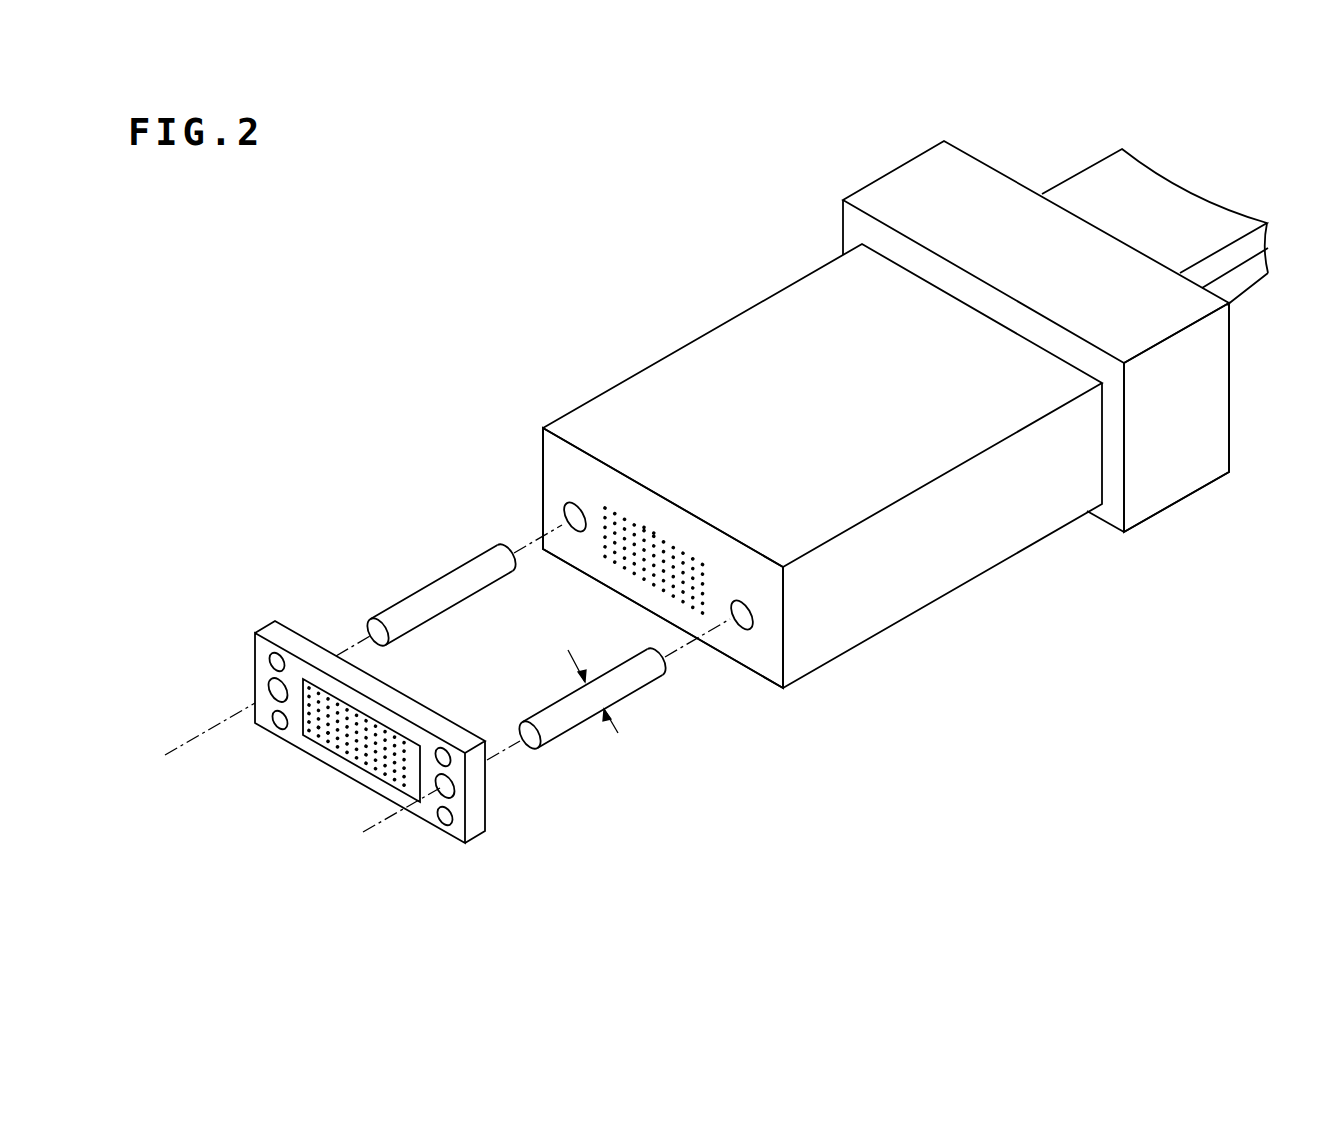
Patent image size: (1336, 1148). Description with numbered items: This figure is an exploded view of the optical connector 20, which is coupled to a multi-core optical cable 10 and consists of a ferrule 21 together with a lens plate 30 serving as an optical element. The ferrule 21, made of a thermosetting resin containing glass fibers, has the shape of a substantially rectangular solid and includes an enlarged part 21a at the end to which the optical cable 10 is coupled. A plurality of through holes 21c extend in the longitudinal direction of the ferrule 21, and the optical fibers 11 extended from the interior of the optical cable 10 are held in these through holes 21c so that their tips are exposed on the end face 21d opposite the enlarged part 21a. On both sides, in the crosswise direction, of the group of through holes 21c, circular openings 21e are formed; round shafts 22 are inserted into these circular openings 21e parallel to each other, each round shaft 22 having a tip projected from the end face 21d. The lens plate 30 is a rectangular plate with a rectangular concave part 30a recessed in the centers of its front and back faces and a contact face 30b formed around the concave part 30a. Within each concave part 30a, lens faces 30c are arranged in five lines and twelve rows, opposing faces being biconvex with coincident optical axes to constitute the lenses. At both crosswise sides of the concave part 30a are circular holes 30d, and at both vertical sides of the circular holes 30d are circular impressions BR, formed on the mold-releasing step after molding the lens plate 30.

The optical cable 10 is at (1177, 215).
The optical fibers 11 is at (665, 555).
The optical connector 20 is at (513, 256).
The ferrule 21 is at (598, 395).
The enlarged part 21a is at (1177, 478).
The through holes 21c is at (656, 577).
The end face 21d is at (555, 480).
The circular openings 21e is at (572, 522).
The round shafts 22 is at (417, 590).
The lens plate 30 is at (268, 622).
The concave part 30a is at (373, 713).
The contact face 30b is at (428, 743).
The lens faces 30c is at (338, 738).
The circular holes 30d is at (268, 695).
The circular impressions BR is at (305, 643).